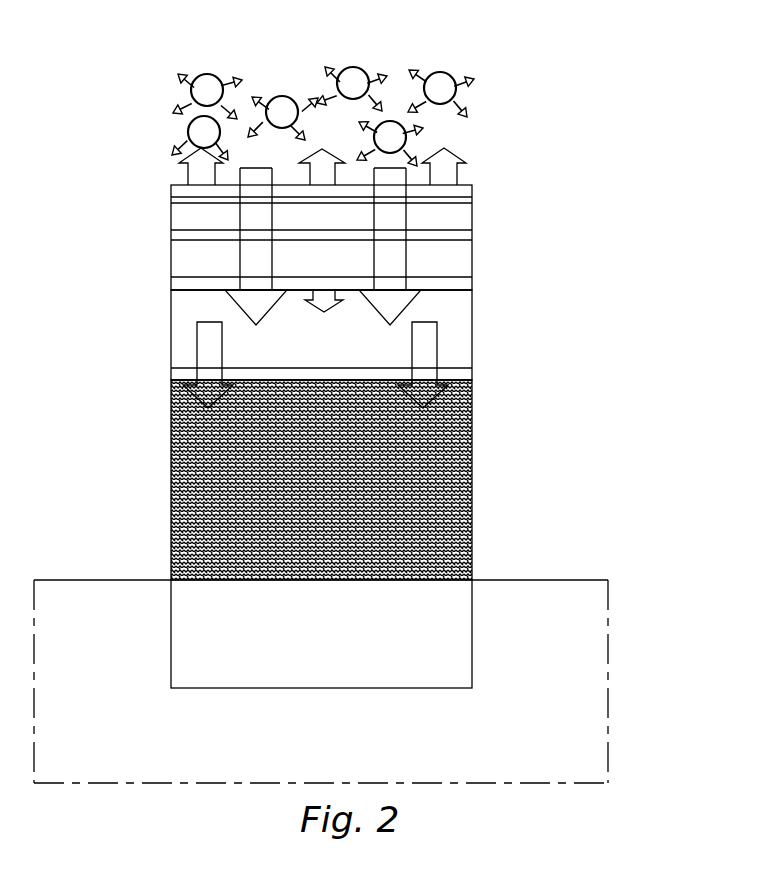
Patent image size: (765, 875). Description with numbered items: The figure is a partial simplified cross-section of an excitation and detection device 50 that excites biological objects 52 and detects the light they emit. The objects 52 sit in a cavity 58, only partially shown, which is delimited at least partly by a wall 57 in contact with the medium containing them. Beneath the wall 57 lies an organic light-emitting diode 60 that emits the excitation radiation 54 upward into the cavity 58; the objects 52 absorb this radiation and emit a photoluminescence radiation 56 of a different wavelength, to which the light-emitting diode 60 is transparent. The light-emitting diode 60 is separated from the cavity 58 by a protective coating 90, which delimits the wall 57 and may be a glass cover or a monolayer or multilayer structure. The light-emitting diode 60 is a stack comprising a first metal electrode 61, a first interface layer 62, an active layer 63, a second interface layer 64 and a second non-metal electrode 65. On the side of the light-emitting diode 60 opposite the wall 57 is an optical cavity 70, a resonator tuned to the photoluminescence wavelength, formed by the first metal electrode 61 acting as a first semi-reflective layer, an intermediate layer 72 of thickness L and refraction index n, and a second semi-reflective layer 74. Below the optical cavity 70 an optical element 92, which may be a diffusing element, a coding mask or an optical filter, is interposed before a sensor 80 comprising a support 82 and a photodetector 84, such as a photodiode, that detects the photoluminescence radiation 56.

The excitation and detection device 50 is at (580, 86).
The objects to be studied 52 is at (437, 86).
The excitation radiation 54 is at (457, 173).
The photoluminescence radiation 56 is at (183, 83).
The wall 57 is at (171, 186).
The cavity 58 is at (296, 70).
The organic light-emitting diode 60 is at (158, 195).
The first metal electrode 61 is at (462, 285).
The first interface layer 62 is at (462, 257).
The active layer 63 is at (463, 233).
The second interface layer 64 is at (463, 218).
The second non-metal electrode 65 is at (463, 202).
The optical cavity 70 is at (160, 342).
The intermediate layer 72 is at (462, 333).
The second semi-reflective layer 74 is at (462, 375).
The sensor 80 is at (587, 578).
The support 82 is at (95, 593).
The photodetector 84 is at (460, 604).
The protective coating 90 is at (171, 193).
The optical element 92 is at (171, 470).